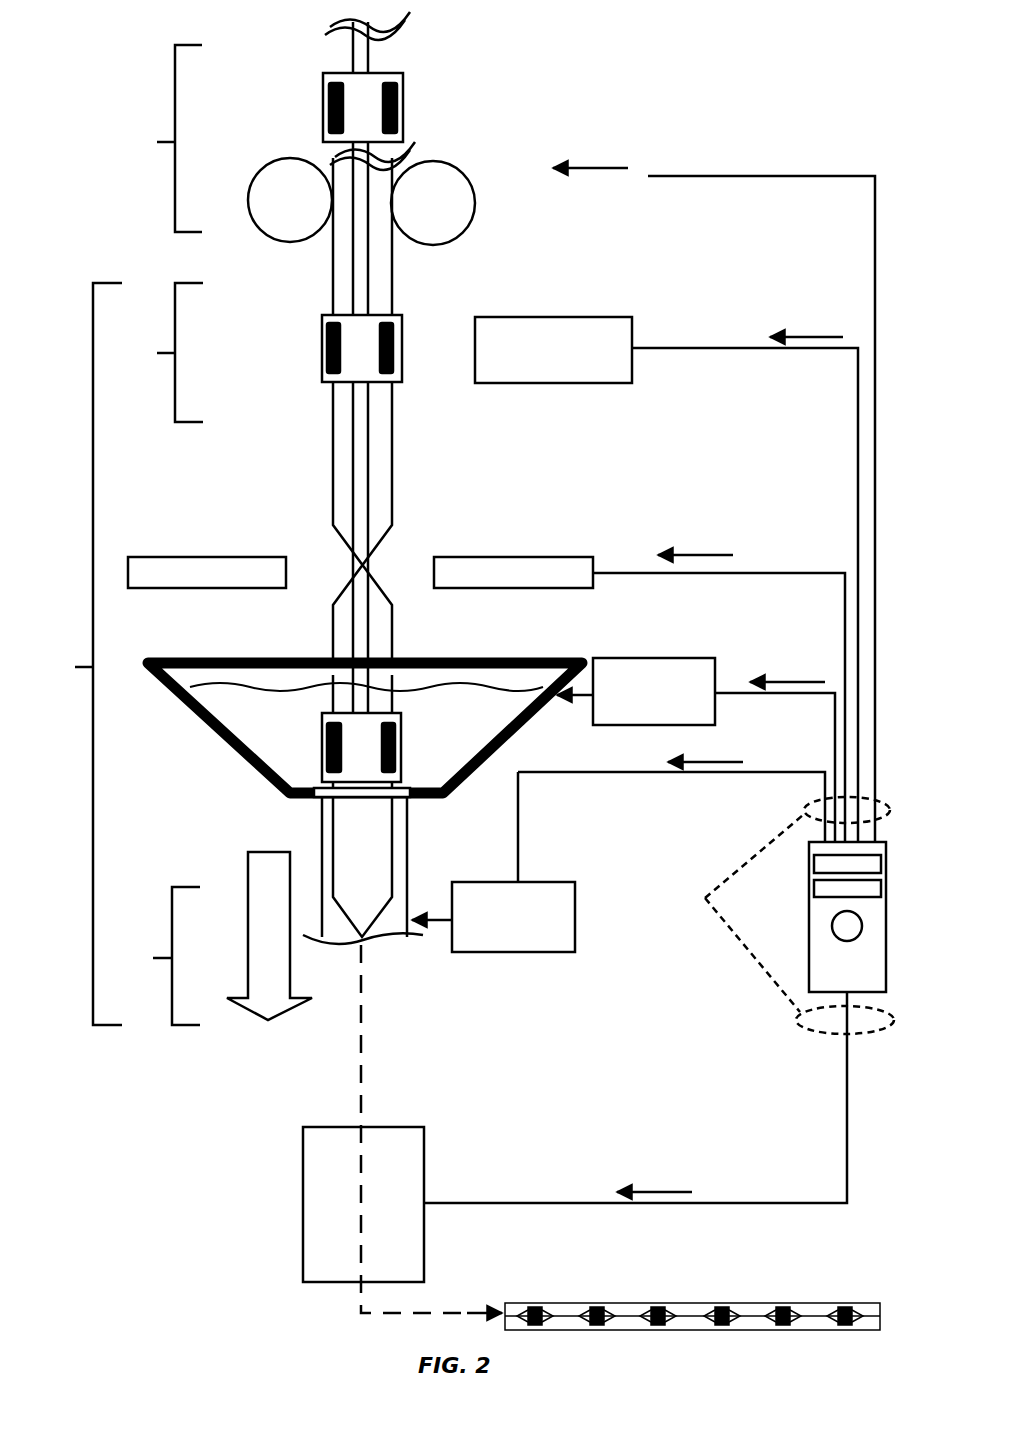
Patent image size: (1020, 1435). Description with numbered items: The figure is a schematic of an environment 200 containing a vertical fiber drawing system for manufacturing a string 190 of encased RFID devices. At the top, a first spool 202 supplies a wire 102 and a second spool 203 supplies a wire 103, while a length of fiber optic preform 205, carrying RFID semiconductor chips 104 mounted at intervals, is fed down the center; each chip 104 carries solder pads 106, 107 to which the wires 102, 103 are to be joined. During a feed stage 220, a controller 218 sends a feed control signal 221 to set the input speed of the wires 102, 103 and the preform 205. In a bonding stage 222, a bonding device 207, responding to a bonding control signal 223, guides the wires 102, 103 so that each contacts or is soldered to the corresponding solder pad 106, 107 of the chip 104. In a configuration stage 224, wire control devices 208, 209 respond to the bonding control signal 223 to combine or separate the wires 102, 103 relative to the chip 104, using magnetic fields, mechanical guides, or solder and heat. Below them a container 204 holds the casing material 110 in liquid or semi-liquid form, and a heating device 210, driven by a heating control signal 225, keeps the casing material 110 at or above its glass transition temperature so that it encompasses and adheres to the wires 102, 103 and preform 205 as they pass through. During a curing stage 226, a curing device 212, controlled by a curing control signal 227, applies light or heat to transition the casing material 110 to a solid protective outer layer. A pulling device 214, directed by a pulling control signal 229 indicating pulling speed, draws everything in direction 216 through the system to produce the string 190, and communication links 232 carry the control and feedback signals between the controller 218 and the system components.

The environment 200 is at (143, 100).
The wire 102 is at (330, 277).
The wire 103 is at (393, 277).
The RFID semiconductor chip 104 is at (308, 58).
The solder pad 106 is at (327, 87).
The solder pad 107 is at (400, 92).
The casing material 110 is at (300, 735).
The string 190 is at (605, 1290).
The first spool 202 is at (287, 158).
The second spool 203 is at (433, 163).
The container 204 is at (228, 738).
The fiber optic preform 205 is at (365, 62).
The bonding device 207 is at (543, 317).
The wire control device 208 is at (173, 557).
The wire control device 209 is at (538, 557).
The heating device 210 is at (628, 657).
The curing device 212 is at (553, 882).
The pulling device 214 is at (303, 1243).
The direction 216 is at (265, 895).
The controller 218 is at (809, 935).
The feed stage 220 is at (159, 138).
The feed control signal 221 is at (610, 168).
The bonding stage 222 is at (159, 352).
The bonding control signal 223 is at (823, 337).
The configuration stage 224 is at (77, 654).
The heating control signal 225 is at (797, 680).
The curing stage 226 is at (156, 956).
The curing control signal 227 is at (717, 761).
The pulling control signal 229 is at (674, 1192).
The communication links 232 is at (772, 915).